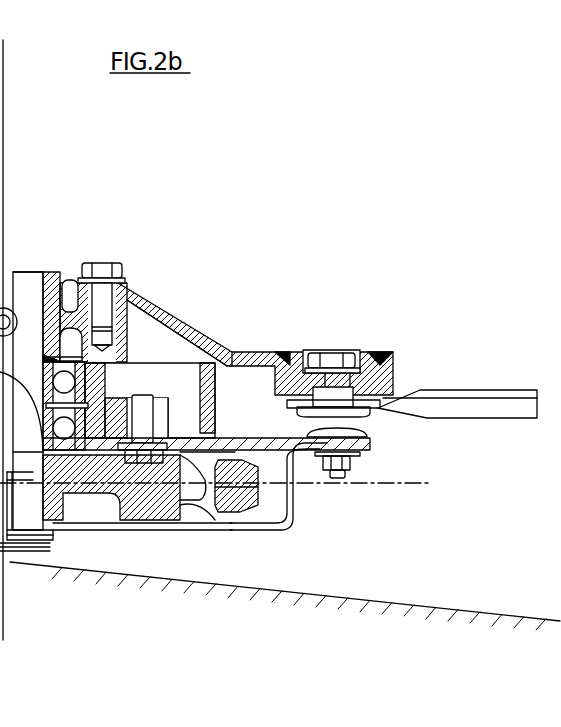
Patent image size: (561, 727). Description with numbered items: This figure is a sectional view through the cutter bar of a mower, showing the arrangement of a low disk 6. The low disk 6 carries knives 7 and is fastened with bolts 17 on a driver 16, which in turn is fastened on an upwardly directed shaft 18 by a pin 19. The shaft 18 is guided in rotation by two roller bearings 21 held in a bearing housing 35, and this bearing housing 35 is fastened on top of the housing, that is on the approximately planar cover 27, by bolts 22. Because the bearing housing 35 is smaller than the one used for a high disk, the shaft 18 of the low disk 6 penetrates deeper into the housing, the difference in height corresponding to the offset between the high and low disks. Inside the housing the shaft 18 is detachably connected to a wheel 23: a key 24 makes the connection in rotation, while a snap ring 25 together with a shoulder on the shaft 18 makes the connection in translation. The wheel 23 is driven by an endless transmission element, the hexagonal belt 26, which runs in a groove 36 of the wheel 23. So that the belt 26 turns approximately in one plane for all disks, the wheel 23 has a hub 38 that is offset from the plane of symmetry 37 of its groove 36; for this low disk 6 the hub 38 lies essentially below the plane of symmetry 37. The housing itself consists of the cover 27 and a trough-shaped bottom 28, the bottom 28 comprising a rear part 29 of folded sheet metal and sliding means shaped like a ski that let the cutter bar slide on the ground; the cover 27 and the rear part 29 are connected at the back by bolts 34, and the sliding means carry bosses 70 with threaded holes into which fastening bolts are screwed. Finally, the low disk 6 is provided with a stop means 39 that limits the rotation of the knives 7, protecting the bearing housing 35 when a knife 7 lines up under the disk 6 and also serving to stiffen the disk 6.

The low disk 6 is at (182, 323).
The knives 7 is at (492, 410).
The driver 16 is at (35, 280).
The bolts 17 is at (101, 266).
The shaft 18 is at (36, 272).
The pin 19 is at (11, 307).
The roller bearings 21 is at (66, 428).
The bolts 22 is at (140, 412).
The wheel 23 is at (222, 510).
The key 24 is at (38, 460).
The snap ring 25 is at (50, 538).
The hexagonal belt 26 is at (252, 502).
The cover 27 is at (258, 438).
The bottom 28 is at (93, 538).
The rear part 29 is at (170, 531).
The bolts 34 is at (352, 465).
The bearing housing 35 is at (110, 377).
The groove 36 is at (198, 492).
The plane of symmetry 37 is at (385, 487).
The hub 38 is at (58, 509).
The stop means 39 is at (210, 395).
The bosses 70 is at (23, 556).